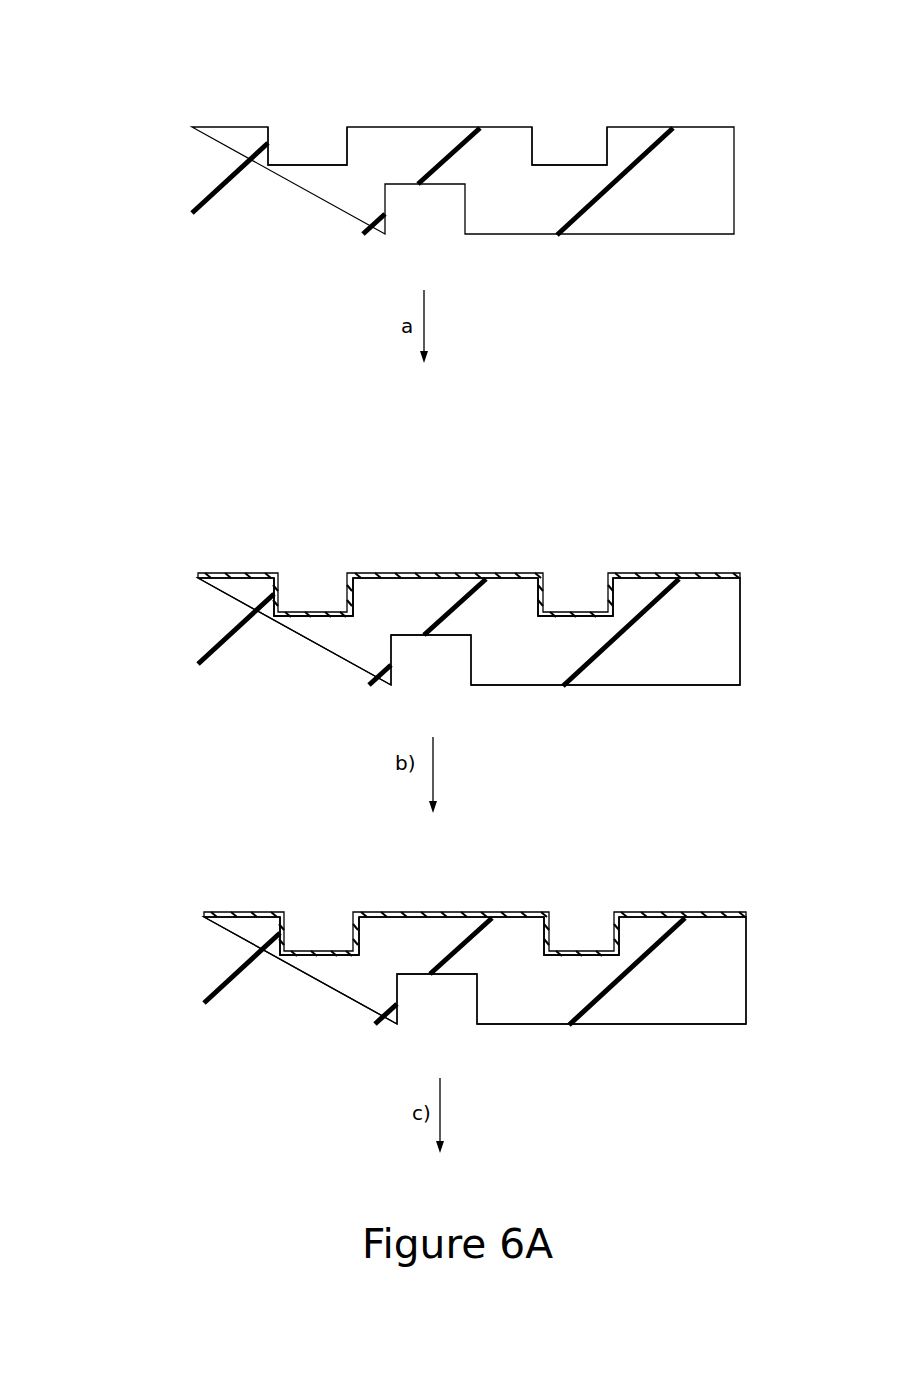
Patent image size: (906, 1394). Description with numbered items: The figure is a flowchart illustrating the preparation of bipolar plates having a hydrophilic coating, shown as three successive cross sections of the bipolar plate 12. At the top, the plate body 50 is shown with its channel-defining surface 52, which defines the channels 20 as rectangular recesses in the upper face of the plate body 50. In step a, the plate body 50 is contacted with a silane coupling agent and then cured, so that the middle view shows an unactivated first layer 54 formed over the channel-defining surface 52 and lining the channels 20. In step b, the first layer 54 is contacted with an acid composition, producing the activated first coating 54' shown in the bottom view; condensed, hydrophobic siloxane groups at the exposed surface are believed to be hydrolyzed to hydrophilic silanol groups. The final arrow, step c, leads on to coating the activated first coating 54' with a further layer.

The bipolar plate 12 is at (190, 640).
The channels 20 is at (287, 116).
The plate body 50 is at (240, 213).
The channel-defining surface 52 is at (281, 163).
The first layer 54 is at (469, 550).
The activated first coating 54' is at (475, 892).